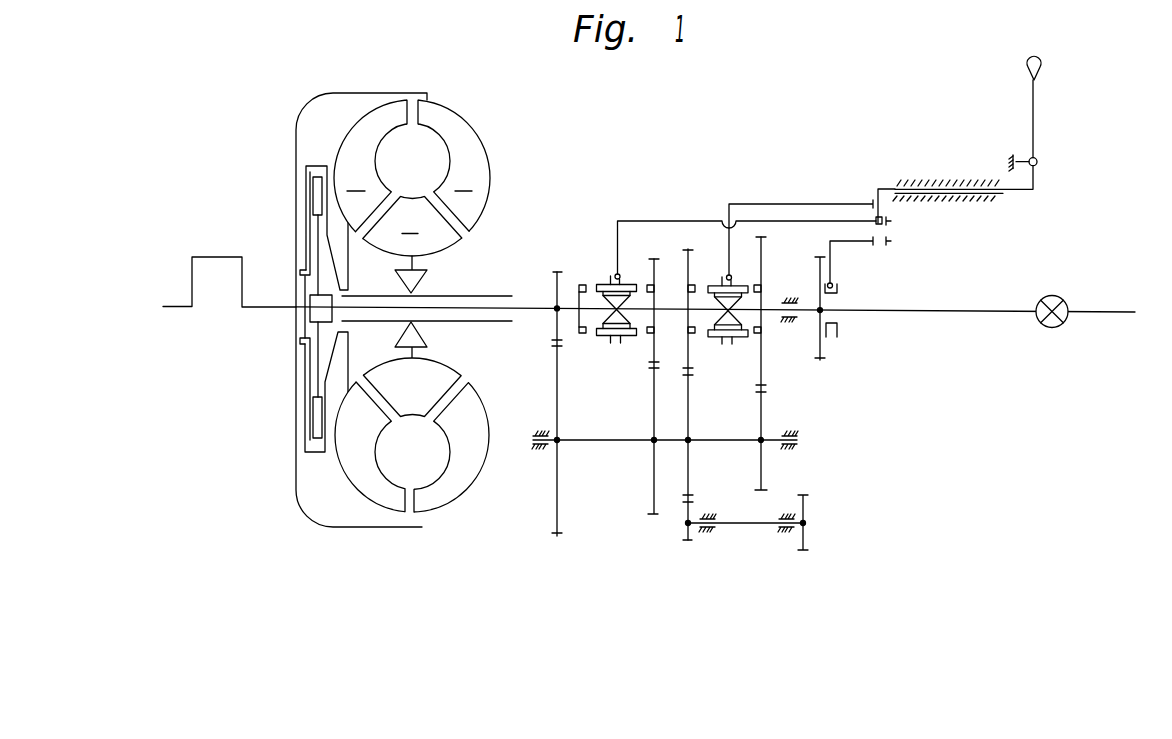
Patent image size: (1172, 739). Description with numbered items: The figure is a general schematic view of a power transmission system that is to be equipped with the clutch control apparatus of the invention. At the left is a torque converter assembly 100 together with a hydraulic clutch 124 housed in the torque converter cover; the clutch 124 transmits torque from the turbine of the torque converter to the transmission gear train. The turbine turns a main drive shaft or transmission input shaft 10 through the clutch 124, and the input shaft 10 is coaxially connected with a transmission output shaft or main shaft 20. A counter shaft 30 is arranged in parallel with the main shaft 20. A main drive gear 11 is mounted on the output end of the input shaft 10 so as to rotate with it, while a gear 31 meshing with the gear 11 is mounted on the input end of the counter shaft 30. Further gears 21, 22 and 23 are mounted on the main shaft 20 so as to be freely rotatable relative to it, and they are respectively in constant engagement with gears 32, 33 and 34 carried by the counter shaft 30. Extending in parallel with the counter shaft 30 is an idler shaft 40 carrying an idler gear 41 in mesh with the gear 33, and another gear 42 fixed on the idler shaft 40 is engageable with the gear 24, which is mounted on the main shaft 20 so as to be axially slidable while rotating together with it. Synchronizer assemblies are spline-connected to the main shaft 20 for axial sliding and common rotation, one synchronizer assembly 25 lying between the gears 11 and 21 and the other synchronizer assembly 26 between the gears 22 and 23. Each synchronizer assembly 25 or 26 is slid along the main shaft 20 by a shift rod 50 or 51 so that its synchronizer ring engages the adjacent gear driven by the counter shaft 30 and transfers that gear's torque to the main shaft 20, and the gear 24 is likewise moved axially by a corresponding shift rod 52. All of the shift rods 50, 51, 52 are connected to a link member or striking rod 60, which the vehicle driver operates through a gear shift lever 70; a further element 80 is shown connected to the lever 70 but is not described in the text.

The transmission input shaft 10 is at (456, 309).
The main drive gear 11 is at (558, 270).
The main shaft 20 is at (923, 312).
The gear 21 is at (654, 258).
The gear 22 is at (690, 247).
The gear 23 is at (765, 247).
The gear 24 is at (813, 262).
The synchronizer assembly 25 is at (608, 276).
The synchronizer assembly 26 is at (734, 276).
The counter shaft 30 is at (592, 442).
The gear 31 is at (556, 538).
The gear 32 is at (652, 516).
The gear 33 is at (687, 477).
The gear 34 is at (762, 474).
The idler shaft 40 is at (751, 524).
The idler gear 41 is at (690, 534).
The gear 42 is at (805, 541).
The shift rod 50 is at (866, 200).
The shift rod 51 is at (892, 219).
The shift rod 52 is at (891, 243).
The striking rod 60 is at (1034, 191).
The gear shift lever 70 is at (1035, 101).
The lamp 80 is at (1041, 60).
The torque converter assembly 100 is at (452, 110).
The hydraulic clutch 124 is at (293, 365).